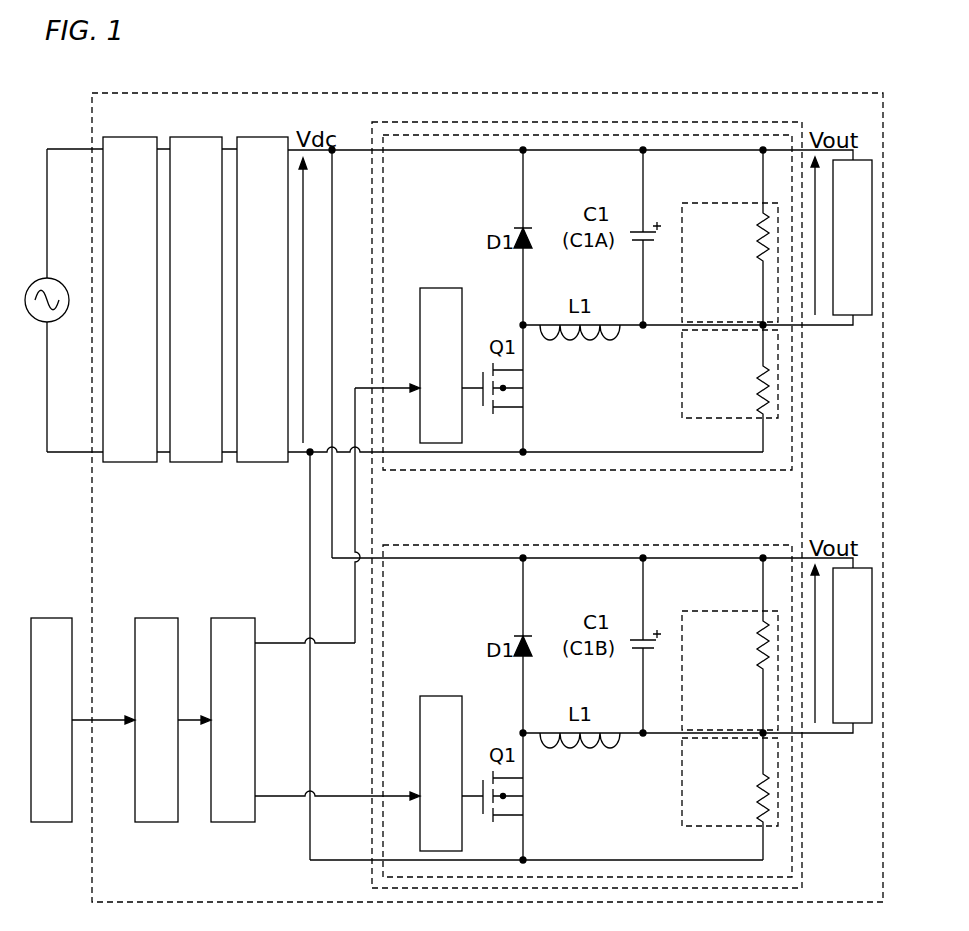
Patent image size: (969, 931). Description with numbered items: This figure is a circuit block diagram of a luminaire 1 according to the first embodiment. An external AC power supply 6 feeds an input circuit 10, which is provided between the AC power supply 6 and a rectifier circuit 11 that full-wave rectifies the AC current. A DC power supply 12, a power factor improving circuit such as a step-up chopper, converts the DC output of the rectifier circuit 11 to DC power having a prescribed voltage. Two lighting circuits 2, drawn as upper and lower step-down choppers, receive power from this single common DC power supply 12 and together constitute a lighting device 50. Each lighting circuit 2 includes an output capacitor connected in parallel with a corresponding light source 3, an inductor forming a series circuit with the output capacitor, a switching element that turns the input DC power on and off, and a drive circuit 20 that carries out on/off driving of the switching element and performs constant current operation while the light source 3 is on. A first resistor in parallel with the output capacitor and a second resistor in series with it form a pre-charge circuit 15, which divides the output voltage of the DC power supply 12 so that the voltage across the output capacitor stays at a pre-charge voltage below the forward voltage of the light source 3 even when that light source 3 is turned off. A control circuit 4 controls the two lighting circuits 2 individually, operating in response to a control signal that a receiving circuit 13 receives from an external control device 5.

The luminaire 1 is at (825, 92).
The lighting device 50 is at (718, 120).
The lighting circuit 2 is at (703, 470).
The input circuit 10 is at (127, 137).
The rectifier circuit 11 is at (183, 139).
The DC power supply 12 is at (262, 139).
The AC power supply 6 is at (41, 283).
The control device 5 is at (50, 617).
The receiving circuit 13 is at (150, 620).
The control circuit 4 is at (236, 617).
The drive circuit 20 is at (436, 298).
The pre-charge circuit 15 is at (682, 377).
The light source 3 is at (858, 318).